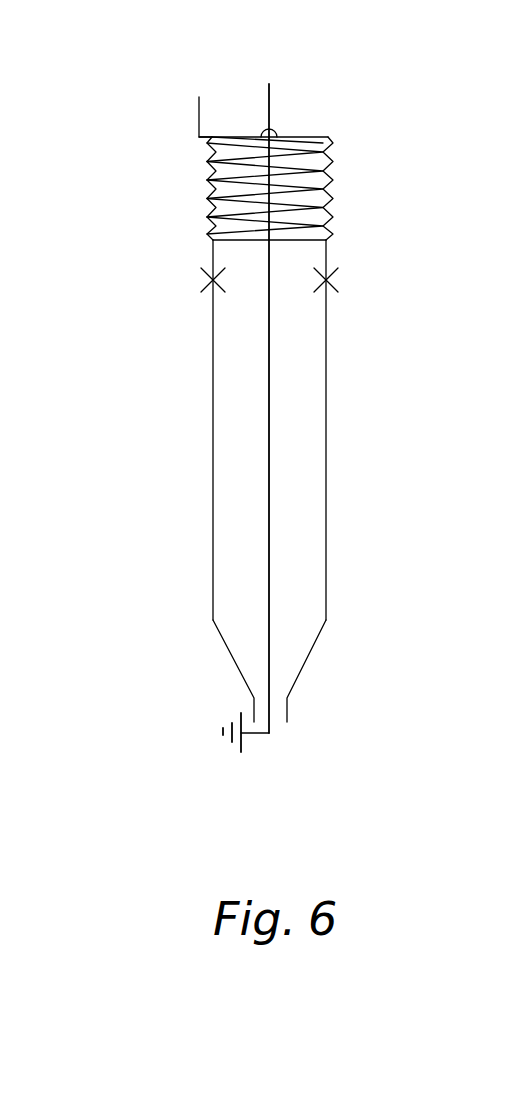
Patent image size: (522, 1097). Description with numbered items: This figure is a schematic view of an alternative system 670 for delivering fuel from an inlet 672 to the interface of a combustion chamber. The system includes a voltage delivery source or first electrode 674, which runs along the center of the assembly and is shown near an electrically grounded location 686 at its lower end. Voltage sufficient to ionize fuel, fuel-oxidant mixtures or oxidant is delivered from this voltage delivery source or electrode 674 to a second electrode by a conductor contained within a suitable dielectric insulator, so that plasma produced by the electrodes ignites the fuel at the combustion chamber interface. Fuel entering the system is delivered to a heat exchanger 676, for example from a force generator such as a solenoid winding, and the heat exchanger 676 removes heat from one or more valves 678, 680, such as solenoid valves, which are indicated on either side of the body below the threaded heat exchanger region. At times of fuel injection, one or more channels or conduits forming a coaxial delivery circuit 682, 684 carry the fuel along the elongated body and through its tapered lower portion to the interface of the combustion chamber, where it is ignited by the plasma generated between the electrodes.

The system 670 is at (178, 177).
The inlet 672 is at (199, 110).
The electrode 674 is at (267, 100).
The heat exchanger 676 is at (334, 163).
The valve 678 is at (337, 280).
The valve 680 is at (207, 283).
The coaxial delivery circuit 682 is at (327, 462).
The coaxial delivery circuit 684 is at (316, 643).
The electrically grounded location 686 is at (228, 727).